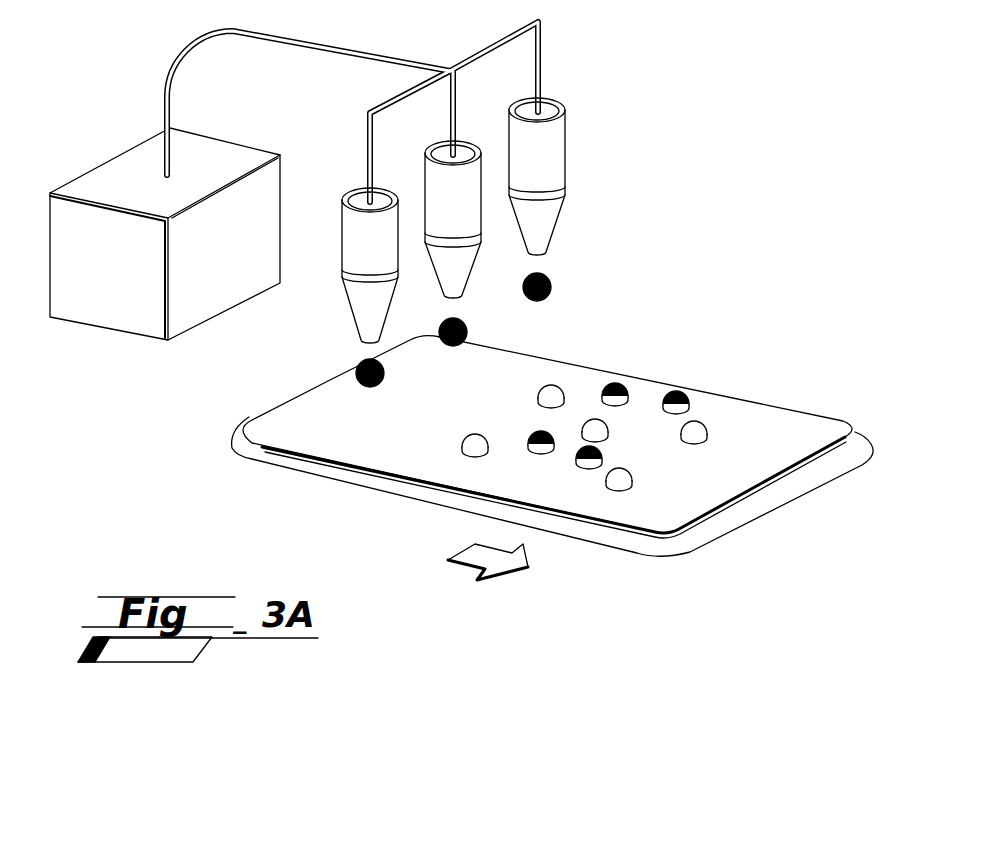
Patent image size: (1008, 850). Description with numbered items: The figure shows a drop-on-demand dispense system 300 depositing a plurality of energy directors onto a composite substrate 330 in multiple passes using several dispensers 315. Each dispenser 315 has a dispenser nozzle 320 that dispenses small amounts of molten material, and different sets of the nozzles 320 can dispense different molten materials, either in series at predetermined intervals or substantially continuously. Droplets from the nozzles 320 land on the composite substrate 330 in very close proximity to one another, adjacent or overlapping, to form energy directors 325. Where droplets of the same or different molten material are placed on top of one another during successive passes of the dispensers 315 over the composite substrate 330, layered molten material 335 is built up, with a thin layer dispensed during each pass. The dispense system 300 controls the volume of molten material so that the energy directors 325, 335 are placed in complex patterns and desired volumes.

The drop-on-demand dispense system 300 is at (461, 326).
The dispenser 315 is at (342, 238).
The dispenser nozzle 320 is at (348, 298).
The energy director 325 is at (553, 385).
The composite substrate 330 is at (763, 448).
The layered molten material 335 is at (570, 440).